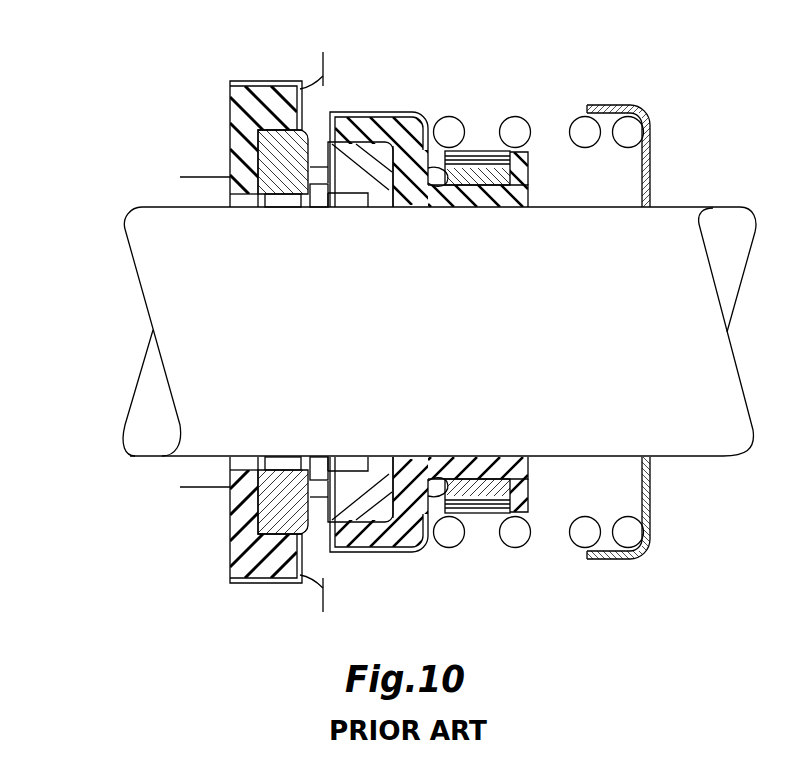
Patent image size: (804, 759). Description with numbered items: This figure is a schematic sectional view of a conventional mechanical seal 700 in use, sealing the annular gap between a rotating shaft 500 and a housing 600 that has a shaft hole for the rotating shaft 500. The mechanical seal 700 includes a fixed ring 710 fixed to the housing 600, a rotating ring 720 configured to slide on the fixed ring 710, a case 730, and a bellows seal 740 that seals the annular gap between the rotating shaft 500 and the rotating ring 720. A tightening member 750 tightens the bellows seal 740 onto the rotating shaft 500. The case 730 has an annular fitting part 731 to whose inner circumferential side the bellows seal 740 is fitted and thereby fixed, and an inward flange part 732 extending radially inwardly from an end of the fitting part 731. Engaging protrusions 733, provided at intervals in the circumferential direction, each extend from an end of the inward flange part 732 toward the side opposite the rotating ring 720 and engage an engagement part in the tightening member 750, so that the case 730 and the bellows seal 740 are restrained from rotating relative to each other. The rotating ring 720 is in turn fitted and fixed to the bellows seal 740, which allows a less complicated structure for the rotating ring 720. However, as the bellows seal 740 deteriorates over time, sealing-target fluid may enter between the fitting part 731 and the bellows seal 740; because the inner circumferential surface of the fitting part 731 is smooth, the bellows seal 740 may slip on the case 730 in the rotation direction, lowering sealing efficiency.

The rotating shaft 500 is at (439, 331).
The housing 600 is at (238, 129).
The mechanical seal 700 is at (442, 75).
The fixed ring 710 is at (291, 188).
The rotating ring 720 is at (353, 190).
The case 730 is at (377, 100).
The fitting part 731 is at (333, 111).
The inward flange part 732 is at (430, 132).
The engaging protrusions 733 is at (483, 150).
The bellows seal 740 is at (468, 198).
The tightening member 750 is at (505, 178).